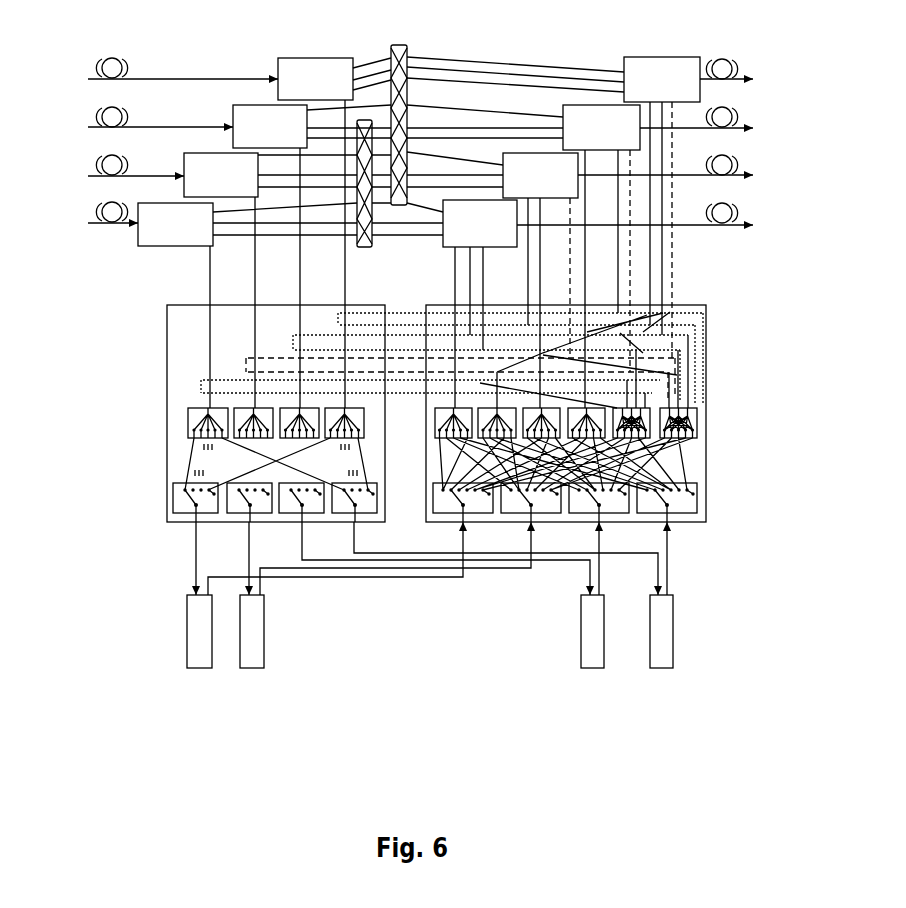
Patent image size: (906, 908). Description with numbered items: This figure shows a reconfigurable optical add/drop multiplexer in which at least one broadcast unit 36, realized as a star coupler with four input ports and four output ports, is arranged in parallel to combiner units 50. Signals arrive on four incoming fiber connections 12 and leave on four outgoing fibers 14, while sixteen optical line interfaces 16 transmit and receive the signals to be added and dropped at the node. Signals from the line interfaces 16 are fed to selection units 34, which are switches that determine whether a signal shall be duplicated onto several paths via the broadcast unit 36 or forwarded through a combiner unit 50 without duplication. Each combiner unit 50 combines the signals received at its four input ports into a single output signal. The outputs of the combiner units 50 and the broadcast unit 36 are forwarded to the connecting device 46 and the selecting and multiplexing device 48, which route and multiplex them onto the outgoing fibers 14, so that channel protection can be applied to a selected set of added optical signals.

The incoming fiber connections 12 is at (76, 53).
The outgoing fibers 14 is at (766, 242).
The optical line interfaces 16 is at (688, 672).
The selection units 34 is at (716, 499).
The broadcast unit 36 is at (693, 408).
The connecting device 46 is at (710, 312).
The selecting and multiplexing device 48 is at (368, 47).
The combiner units 50 is at (437, 424).